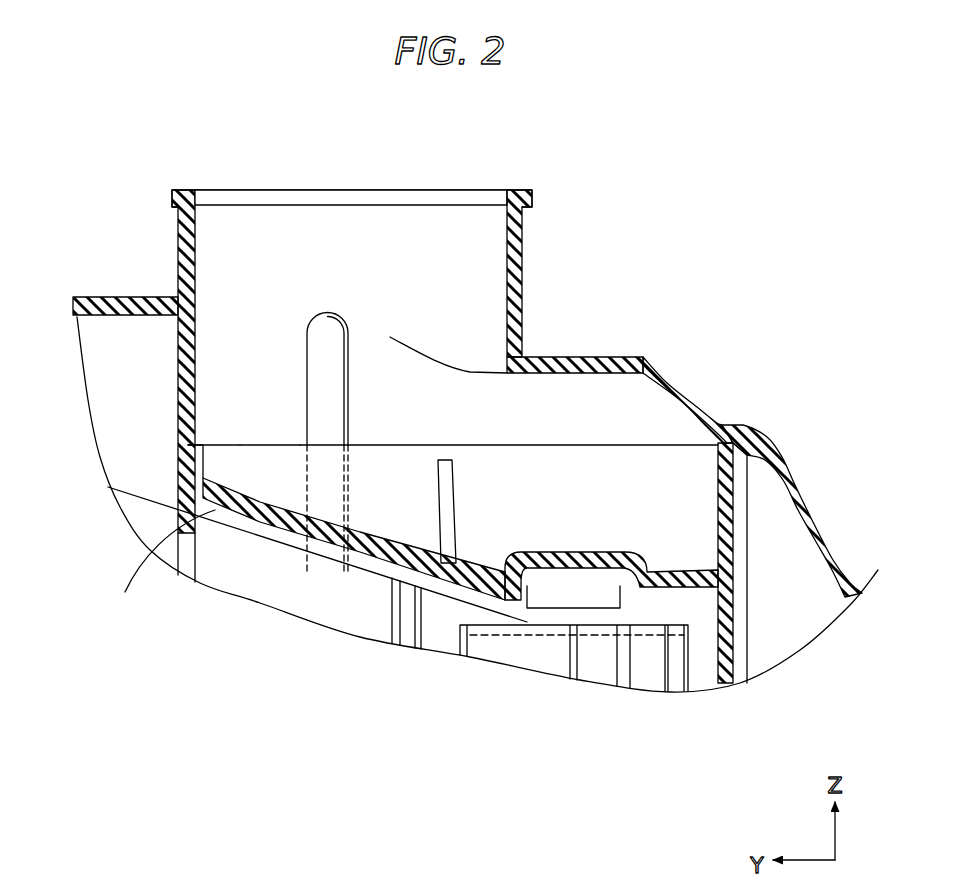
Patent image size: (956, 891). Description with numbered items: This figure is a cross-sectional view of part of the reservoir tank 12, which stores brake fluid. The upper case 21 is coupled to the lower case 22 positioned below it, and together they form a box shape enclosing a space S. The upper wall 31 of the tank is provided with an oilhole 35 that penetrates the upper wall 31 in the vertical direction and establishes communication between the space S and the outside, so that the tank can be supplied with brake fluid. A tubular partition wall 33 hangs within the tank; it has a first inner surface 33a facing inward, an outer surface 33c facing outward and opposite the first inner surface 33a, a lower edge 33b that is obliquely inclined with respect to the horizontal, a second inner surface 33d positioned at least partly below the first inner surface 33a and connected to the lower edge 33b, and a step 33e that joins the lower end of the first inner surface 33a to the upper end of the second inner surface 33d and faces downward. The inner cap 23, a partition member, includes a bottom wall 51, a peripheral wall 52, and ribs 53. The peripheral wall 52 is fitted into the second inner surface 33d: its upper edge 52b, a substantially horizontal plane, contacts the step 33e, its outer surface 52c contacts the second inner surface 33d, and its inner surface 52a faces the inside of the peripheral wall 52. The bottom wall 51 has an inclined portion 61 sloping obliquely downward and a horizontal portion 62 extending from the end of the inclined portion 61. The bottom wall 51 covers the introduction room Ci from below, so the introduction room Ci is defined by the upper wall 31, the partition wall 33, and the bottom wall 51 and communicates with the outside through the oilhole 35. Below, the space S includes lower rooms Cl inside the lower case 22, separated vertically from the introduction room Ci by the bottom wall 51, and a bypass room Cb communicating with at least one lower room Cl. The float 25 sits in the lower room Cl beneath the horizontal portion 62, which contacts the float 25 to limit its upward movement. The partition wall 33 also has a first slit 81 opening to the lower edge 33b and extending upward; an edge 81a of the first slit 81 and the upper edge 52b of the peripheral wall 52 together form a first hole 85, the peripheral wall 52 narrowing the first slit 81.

The reservoir tank 12 is at (451, 370).
The upper case 21 is at (630, 357).
The lower case 22 is at (165, 537).
The inner cap 23 is at (641, 445).
The float 25 is at (467, 660).
The upper wall 31 is at (592, 390).
The partition wall 33 is at (437, 413).
The first inner surface 33a is at (197, 343).
The lower edge 33b is at (157, 561).
The outer surface 33c is at (175, 378).
The second inner surface 33d is at (197, 483).
The step 33e is at (176, 465).
The oilhole 35 is at (412, 214).
The bottom wall 51 is at (333, 580).
The peripheral wall 52 is at (767, 432).
The inner surface 52a is at (265, 445).
The upper edge 52b is at (203, 445).
The outer surface 52c is at (176, 474).
The rib 53 is at (457, 500).
The inclined portion 61 is at (335, 535).
The horizontal portion 62 is at (653, 585).
The first slit 81 is at (345, 275).
The edge of the first slit 81a is at (352, 348).
The first hole 85 is at (333, 326).
The bypass room Cb is at (106, 326).
The introduction room Ci is at (605, 351).
The lower room Cl is at (283, 616).
The space S is at (808, 579).